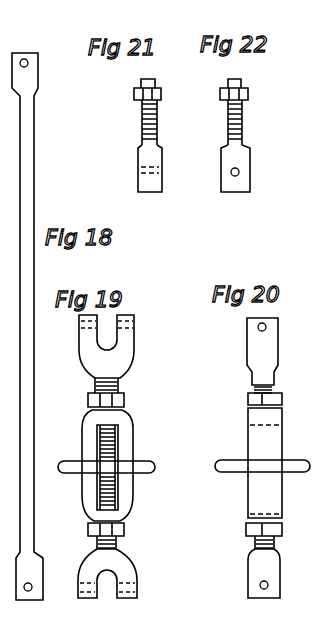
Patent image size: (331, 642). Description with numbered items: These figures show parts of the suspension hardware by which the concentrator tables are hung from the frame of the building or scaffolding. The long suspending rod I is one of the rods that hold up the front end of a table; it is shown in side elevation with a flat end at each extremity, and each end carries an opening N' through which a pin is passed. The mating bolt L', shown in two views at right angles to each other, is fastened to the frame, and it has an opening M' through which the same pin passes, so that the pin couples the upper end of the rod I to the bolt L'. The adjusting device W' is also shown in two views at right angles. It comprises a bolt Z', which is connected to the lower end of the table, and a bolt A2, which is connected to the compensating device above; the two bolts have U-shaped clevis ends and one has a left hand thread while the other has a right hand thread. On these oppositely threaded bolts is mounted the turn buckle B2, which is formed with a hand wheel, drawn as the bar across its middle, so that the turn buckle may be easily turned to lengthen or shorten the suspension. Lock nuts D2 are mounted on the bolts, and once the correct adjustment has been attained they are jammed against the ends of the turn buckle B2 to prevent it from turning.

In FIG. 18, the suspending rod I is at (35, 200).
In FIG. 18, the opening N' is at (44, 301).
In FIG. 21, the bolt L' is at (123, 135).
In FIG. 22, the bolt L' is at (249, 135).
In FIG. 22, the opening M' is at (261, 178).
In FIG. 19, the bolt A2 is at (120, 352).
In FIG. 19, the lock nut D2 is at (88, 398).
In FIG. 19, the adjusting device W' is at (124, 457).
In FIG. 19, the turn buckle B2 is at (130, 445).
In FIG. 19, the bolt Z' is at (126, 560).